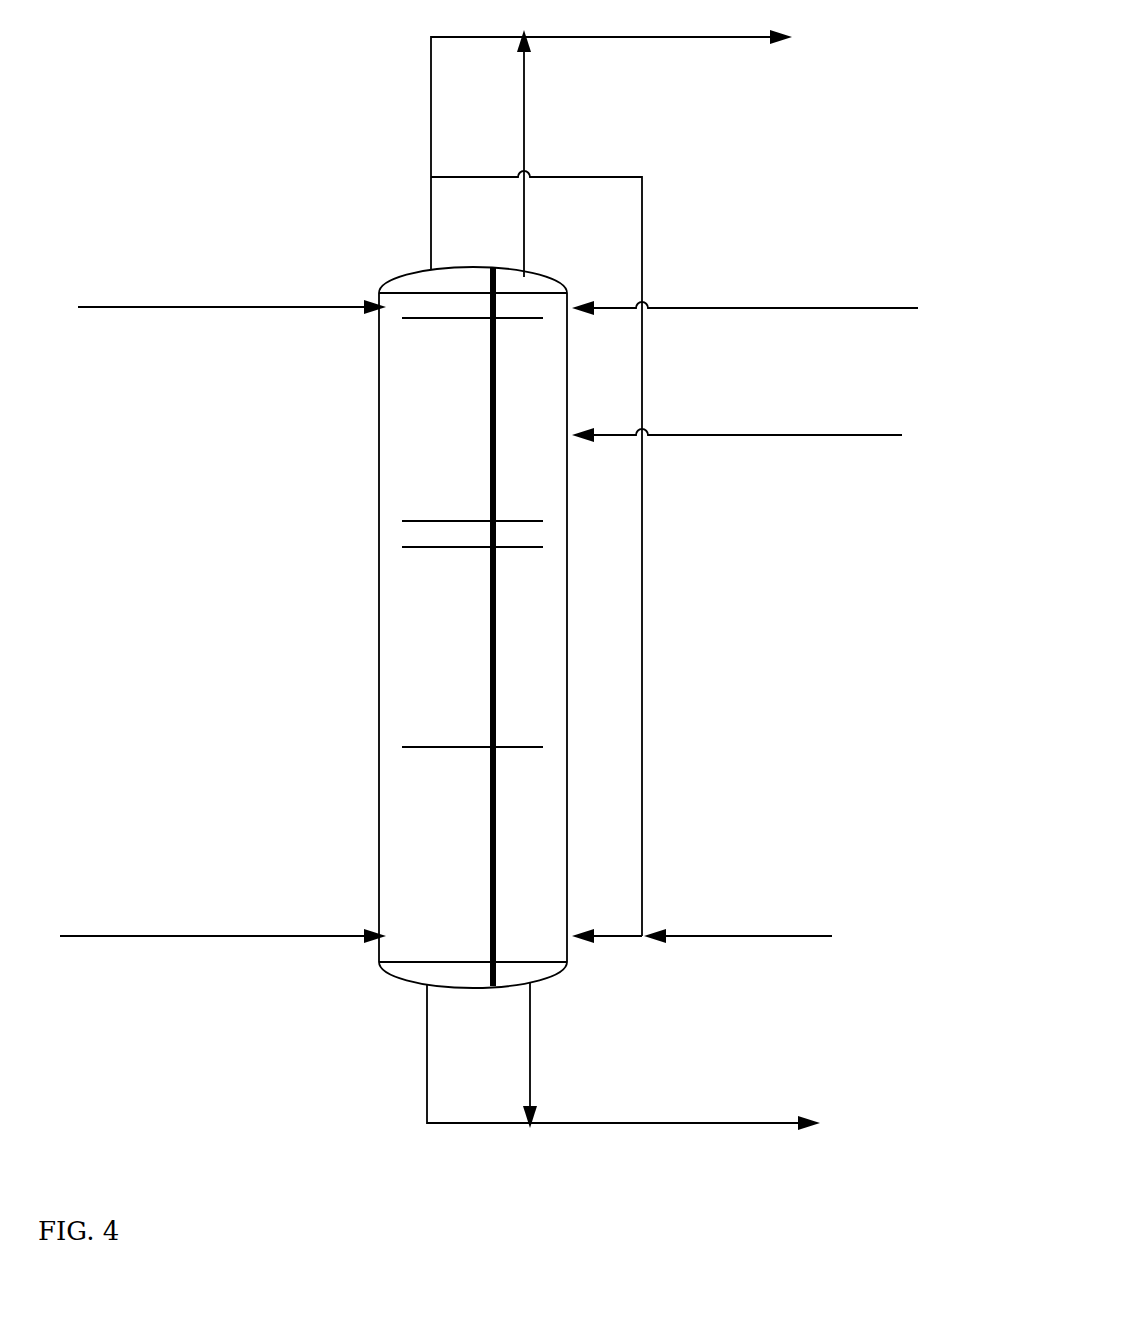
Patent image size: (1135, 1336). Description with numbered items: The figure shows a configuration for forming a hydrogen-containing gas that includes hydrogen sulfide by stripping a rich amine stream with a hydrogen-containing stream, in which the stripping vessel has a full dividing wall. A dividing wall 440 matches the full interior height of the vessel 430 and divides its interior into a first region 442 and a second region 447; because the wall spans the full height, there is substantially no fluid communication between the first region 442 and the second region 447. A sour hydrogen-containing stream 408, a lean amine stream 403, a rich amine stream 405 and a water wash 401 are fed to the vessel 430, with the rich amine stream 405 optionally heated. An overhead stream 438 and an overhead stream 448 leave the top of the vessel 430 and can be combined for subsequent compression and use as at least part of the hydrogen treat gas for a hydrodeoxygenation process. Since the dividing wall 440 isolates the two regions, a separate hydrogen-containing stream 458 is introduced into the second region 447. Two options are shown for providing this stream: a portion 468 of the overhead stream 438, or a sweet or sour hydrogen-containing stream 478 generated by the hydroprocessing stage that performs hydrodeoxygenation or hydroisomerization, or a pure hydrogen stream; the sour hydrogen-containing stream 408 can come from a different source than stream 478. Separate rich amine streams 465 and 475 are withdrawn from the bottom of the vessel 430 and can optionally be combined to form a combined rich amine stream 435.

The water wash 401 is at (778, 295).
The lean amine stream 403 is at (191, 323).
The rich amine stream 405 is at (820, 405).
The sour hydrogen-containing stream 408 is at (212, 918).
The vessel 430 is at (358, 529).
The combined rich amine stream 435 is at (698, 1103).
The overhead stream 438 is at (402, 208).
The dividing wall 440 is at (478, 579).
The first region 442 is at (425, 622).
The second region 447 is at (513, 563).
The overhead stream 448 is at (542, 143).
The separate hydrogen-containing stream 458 is at (612, 953).
The rich amine stream 465 is at (405, 1075).
The portion of overhead stream 468 is at (658, 213).
The rich amine stream 475 is at (547, 1085).
The sweet or sour hydrogen-containing stream 478 is at (813, 919).